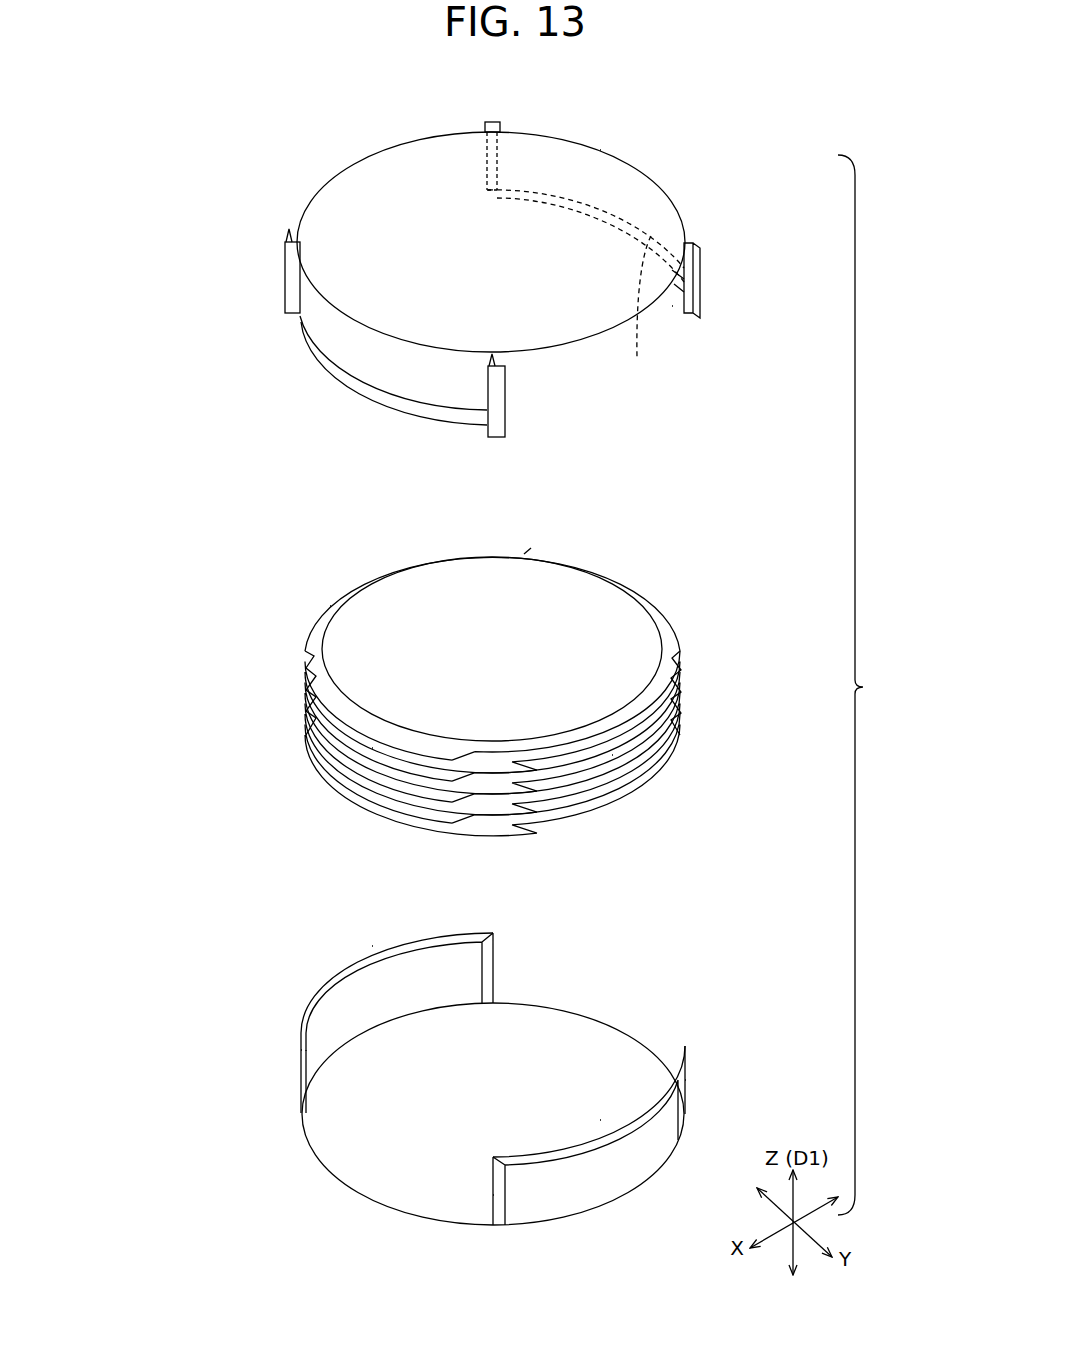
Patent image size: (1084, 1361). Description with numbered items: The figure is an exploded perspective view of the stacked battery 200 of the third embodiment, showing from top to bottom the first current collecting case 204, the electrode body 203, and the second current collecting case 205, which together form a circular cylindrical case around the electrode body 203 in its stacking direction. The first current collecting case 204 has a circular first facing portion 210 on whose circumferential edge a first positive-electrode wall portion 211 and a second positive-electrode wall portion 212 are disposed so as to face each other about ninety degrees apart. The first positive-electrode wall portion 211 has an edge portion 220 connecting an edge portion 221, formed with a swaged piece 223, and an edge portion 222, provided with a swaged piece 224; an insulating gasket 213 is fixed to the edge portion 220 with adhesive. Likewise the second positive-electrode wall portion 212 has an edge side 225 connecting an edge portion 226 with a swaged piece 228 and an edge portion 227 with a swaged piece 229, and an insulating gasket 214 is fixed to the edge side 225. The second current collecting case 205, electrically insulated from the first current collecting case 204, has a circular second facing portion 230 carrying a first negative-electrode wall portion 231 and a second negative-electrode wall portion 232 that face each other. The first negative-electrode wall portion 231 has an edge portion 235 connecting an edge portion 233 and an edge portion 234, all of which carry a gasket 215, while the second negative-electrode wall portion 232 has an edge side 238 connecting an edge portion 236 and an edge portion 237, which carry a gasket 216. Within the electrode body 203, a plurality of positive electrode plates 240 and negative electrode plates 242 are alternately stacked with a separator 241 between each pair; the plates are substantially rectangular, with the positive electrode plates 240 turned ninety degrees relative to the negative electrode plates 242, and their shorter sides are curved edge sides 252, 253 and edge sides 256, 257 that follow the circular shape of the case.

The stacked battery 200 is at (874, 685).
The electrode body 203 is at (210, 585).
The first current collecting case 204 is at (162, 178).
The second current collecting case 205 is at (222, 988).
The first facing portion 210 is at (368, 190).
The first positive-electrode wall portion 211 is at (357, 372).
The second positive-electrode wall portion 212 is at (640, 200).
The gasket 213 is at (385, 400).
The gasket 214 is at (632, 308).
The gasket 215 is at (336, 992).
The gasket 216 is at (556, 1154).
The edge portion 220 is at (379, 398).
The edge portion 221 is at (544, 395).
The edge portion 222 is at (262, 248).
The swaged piece 223 is at (506, 410).
The swaged piece 224 is at (285, 282).
The edge side 225 is at (672, 309).
The edge portion 226 is at (745, 280).
The edge portion 227 is at (545, 189).
The swaged piece 228 is at (702, 289).
The swaged piece 229 is at (486, 122).
The second facing portion 230 is at (364, 1190).
The first negative-electrode wall portion 231 is at (313, 1050).
The second negative-electrode wall portion 232 is at (567, 1142).
The edge portion 233 is at (292, 1053).
The edge portion 234 is at (397, 996).
The edge portion 235 is at (372, 943).
The edge portion 236 is at (477, 1192).
The edge portion 237 is at (696, 1079).
The edge side 238 is at (595, 1120).
The positive electrode plate 240 is at (491, 675).
The separator 241 is at (497, 570).
The negative electrode plate 242 is at (308, 631).
The edge side 252 is at (648, 590).
The edge side 253 is at (372, 748).
The edge side 256 is at (612, 755).
The edge side 257 is at (330, 606).